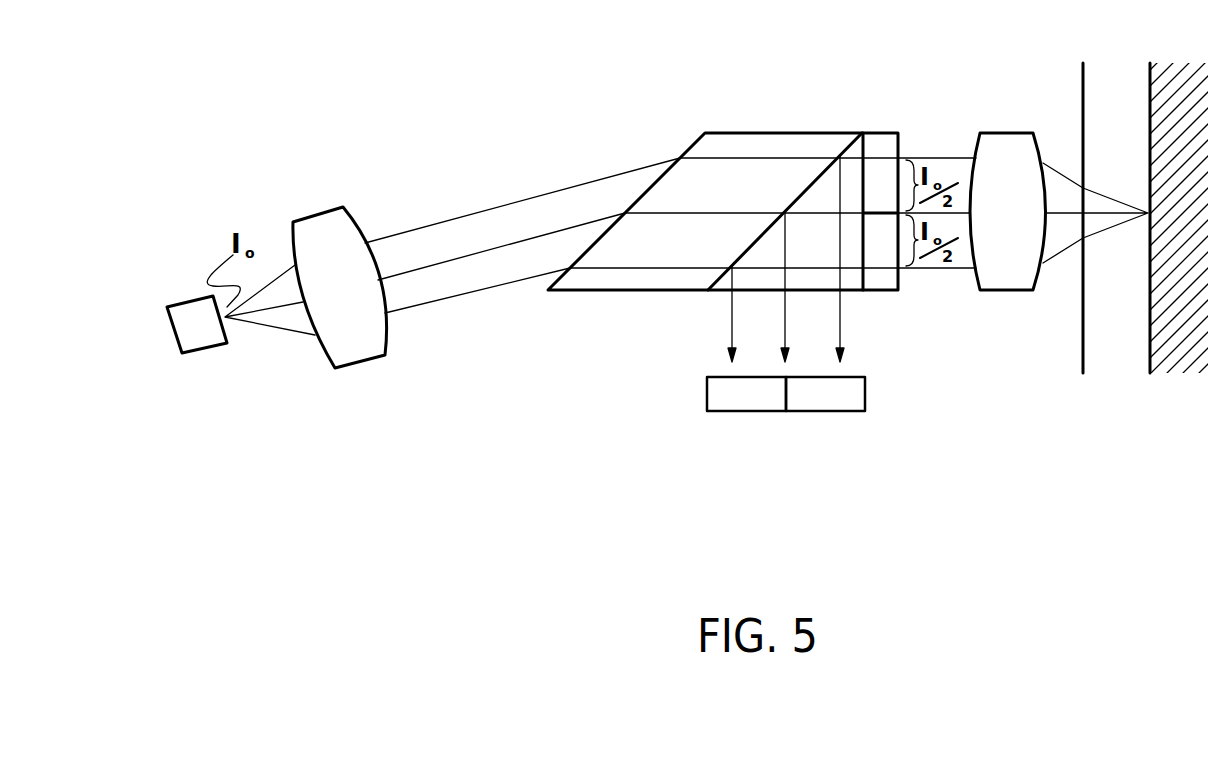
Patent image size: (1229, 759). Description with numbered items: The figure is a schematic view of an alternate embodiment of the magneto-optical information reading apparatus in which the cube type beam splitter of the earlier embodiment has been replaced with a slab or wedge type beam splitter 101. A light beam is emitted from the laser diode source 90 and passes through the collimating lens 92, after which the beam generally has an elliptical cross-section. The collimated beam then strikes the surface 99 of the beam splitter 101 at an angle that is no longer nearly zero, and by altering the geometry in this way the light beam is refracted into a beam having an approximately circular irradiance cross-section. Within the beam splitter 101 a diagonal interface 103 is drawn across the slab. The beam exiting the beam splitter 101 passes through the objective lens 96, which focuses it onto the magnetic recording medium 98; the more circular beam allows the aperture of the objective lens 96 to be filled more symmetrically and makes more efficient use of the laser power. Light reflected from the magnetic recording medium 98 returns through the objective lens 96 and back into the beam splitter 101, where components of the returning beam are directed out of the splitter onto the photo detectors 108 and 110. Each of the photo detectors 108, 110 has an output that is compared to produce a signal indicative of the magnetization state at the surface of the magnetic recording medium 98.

The laser diode source 90 is at (193, 355).
The collimating lens 92 is at (360, 370).
The surface of beam splitter 99 is at (642, 188).
The slab or wedge type beam splitter 101 is at (758, 132).
The partially reflecting diagonal surface 103 is at (807, 187).
The objective lens 96 is at (1003, 133).
The magnetic recording medium 98 is at (1148, 117).
The photo detector 108 is at (703, 397).
The photo detector 110 is at (867, 395).